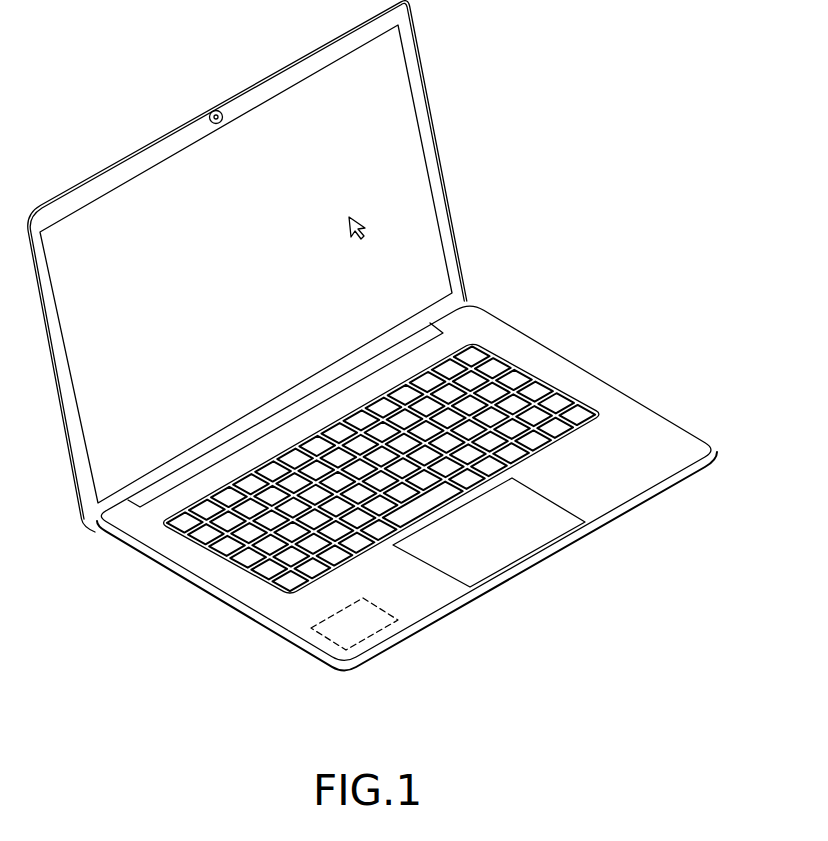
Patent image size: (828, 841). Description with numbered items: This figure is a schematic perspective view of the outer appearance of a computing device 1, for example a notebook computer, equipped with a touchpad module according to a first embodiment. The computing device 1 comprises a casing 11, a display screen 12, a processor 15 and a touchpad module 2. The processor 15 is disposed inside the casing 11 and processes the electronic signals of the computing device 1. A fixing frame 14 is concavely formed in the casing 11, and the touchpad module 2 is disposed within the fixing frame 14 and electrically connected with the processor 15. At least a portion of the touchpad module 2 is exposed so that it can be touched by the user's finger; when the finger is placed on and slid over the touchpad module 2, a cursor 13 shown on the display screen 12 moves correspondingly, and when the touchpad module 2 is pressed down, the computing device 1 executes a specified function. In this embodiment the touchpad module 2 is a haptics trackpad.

The computing device 1 is at (372, 353).
The casing 11 is at (407, 506).
The display screen 12 is at (399, 87).
The cursor 13 is at (357, 212).
The fixing frame 14 is at (489, 572).
The touchpad module 2 is at (519, 512).
The processor 15 is at (343, 630).